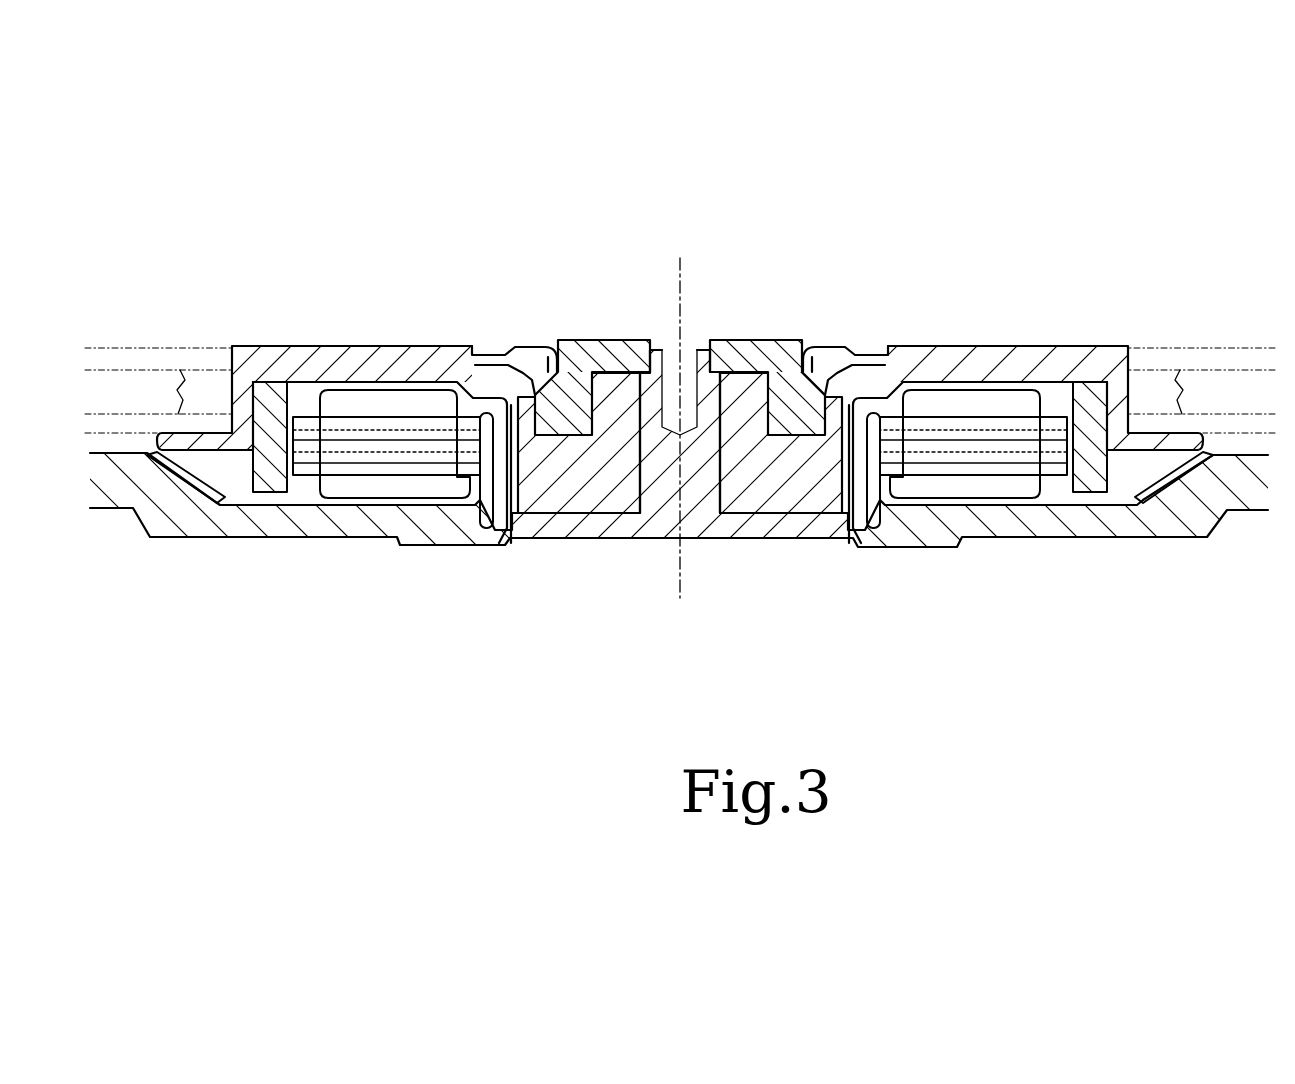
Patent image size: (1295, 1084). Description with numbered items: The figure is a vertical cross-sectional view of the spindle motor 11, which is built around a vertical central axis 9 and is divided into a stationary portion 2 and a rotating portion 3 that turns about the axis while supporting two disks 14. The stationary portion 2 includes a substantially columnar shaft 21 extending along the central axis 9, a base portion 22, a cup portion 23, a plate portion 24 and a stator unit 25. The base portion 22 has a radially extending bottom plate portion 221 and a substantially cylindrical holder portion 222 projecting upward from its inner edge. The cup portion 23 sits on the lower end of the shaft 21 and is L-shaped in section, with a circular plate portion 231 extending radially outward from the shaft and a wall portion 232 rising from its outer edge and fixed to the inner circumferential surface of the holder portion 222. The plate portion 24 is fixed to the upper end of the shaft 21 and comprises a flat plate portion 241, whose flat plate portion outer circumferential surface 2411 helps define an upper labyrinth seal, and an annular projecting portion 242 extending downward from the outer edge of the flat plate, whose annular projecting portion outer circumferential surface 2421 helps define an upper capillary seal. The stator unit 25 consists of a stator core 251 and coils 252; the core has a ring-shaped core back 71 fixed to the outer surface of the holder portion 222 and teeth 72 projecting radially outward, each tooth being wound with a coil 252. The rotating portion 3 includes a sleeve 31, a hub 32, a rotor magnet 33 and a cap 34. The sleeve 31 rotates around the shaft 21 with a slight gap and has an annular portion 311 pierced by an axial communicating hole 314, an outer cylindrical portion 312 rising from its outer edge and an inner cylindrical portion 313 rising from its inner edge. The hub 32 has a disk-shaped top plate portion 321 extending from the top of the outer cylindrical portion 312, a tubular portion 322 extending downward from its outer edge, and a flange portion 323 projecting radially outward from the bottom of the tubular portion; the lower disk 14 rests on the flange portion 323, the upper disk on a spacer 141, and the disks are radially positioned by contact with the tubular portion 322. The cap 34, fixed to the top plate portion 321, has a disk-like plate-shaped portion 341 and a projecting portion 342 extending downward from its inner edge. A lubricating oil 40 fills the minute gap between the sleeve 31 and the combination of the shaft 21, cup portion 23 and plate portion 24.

The spindle motor 11 is at (163, 208).
The central axis 9 is at (690, 280).
The stationary portion 2 is at (659, 514).
The shaft 21 is at (665, 472).
The base portion 22 is at (985, 574).
The bottom plate portion 221 is at (1010, 520).
The holder portion 222 is at (942, 530).
The cup portion 23 is at (508, 512).
The circular plate portion 231 is at (565, 518).
The wall portion 232 is at (500, 522).
The plate portion 24 is at (801, 329).
The flat plate portion 241 is at (807, 329).
The flat plate portion outer circumferential surface 2411 is at (810, 370).
The annular projecting portion 242 is at (801, 350).
The annular projecting portion outer circumferential surface 2421 is at (832, 403).
The stator unit 25 is at (386, 524).
The stator core 251 is at (345, 464).
The coils 252 is at (385, 490).
The rotating portion 3 is at (1063, 338).
The sleeve 31 is at (848, 516).
The annular portion 311 is at (778, 432).
The outer cylindrical portion 312 is at (858, 478).
The inner cylindrical portion 313 is at (745, 432).
The communicating hole 314 is at (818, 492).
The hub 32 is at (314, 347).
The top plate portion 321 is at (330, 362).
The tubular portion 322 is at (224, 412).
The flange portion 323 is at (162, 442).
The rotor magnet 33 is at (262, 482).
The cap 34 is at (575, 331).
The plate-shaped portion 341 is at (503, 353).
The projecting portion 342 is at (546, 366).
The lubricating oil 40 is at (533, 405).
The core back 71 is at (890, 437).
The teeth 72 is at (1032, 437).
The disks 14 is at (1201, 336).
The spacer 141 is at (1137, 388).